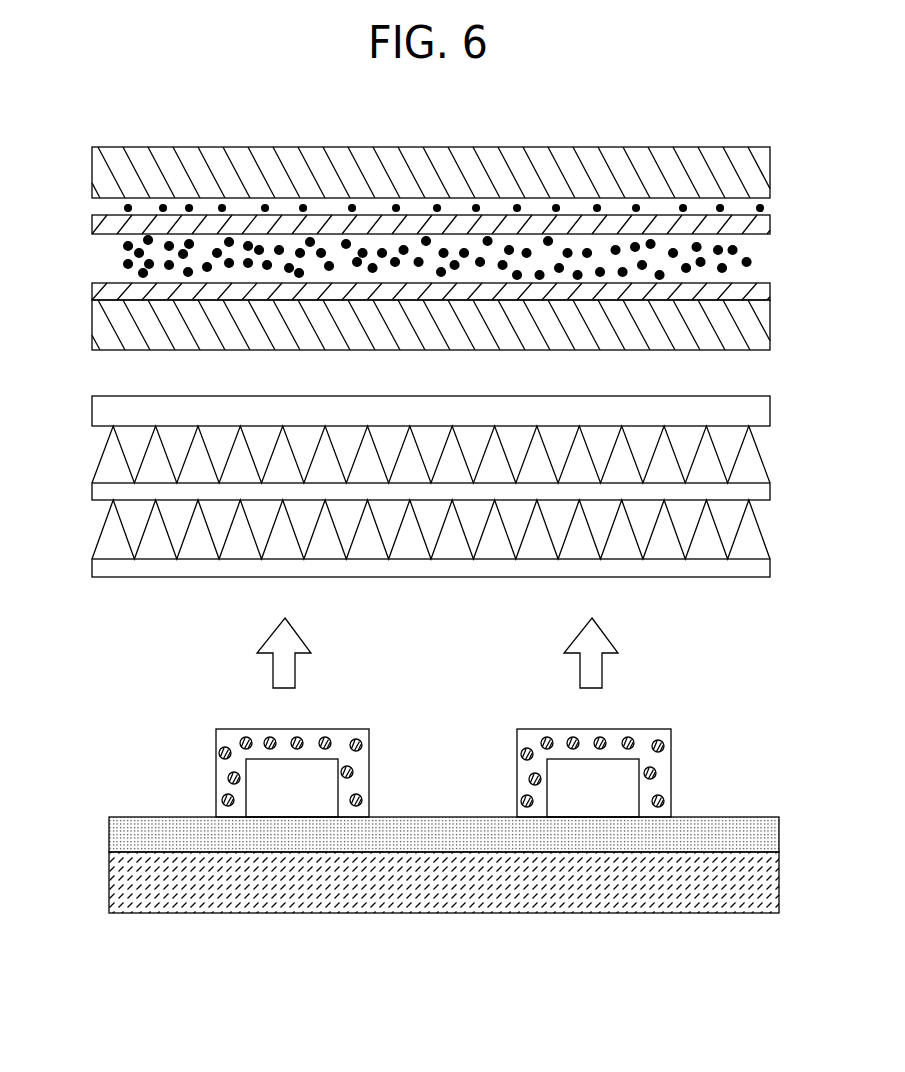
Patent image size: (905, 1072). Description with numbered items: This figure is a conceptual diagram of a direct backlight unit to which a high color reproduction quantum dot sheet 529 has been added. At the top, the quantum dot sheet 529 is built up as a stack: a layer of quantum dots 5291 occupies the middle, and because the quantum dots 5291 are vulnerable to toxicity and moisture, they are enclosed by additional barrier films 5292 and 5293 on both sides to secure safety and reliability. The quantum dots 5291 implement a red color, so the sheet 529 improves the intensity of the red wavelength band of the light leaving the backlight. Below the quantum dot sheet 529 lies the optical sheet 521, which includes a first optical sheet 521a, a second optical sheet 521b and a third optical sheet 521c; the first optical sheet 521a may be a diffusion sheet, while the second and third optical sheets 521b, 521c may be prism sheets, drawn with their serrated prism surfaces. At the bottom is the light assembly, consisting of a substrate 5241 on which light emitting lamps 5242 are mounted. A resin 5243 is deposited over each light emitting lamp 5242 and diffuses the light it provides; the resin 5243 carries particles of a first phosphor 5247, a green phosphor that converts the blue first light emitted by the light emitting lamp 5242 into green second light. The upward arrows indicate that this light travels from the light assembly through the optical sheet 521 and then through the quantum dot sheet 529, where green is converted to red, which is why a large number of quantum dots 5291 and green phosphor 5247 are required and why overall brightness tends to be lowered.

The high color reproduction quantum dot sheet 529 is at (435, 248).
The quantum dot 5291 is at (124, 265).
The barrier film 5292 is at (100, 178).
The barrier film 5293 is at (100, 224).
The optical sheet 521 is at (436, 486).
The first optical sheet 521a is at (100, 411).
The second optical sheet 521b is at (100, 470).
The third optical sheet 521c is at (100, 553).
The substrate 5241 is at (125, 835).
The light emitting lamp 5242 is at (255, 790).
The resin 5243 is at (449, 773).
The first phosphor 5247 is at (353, 770).